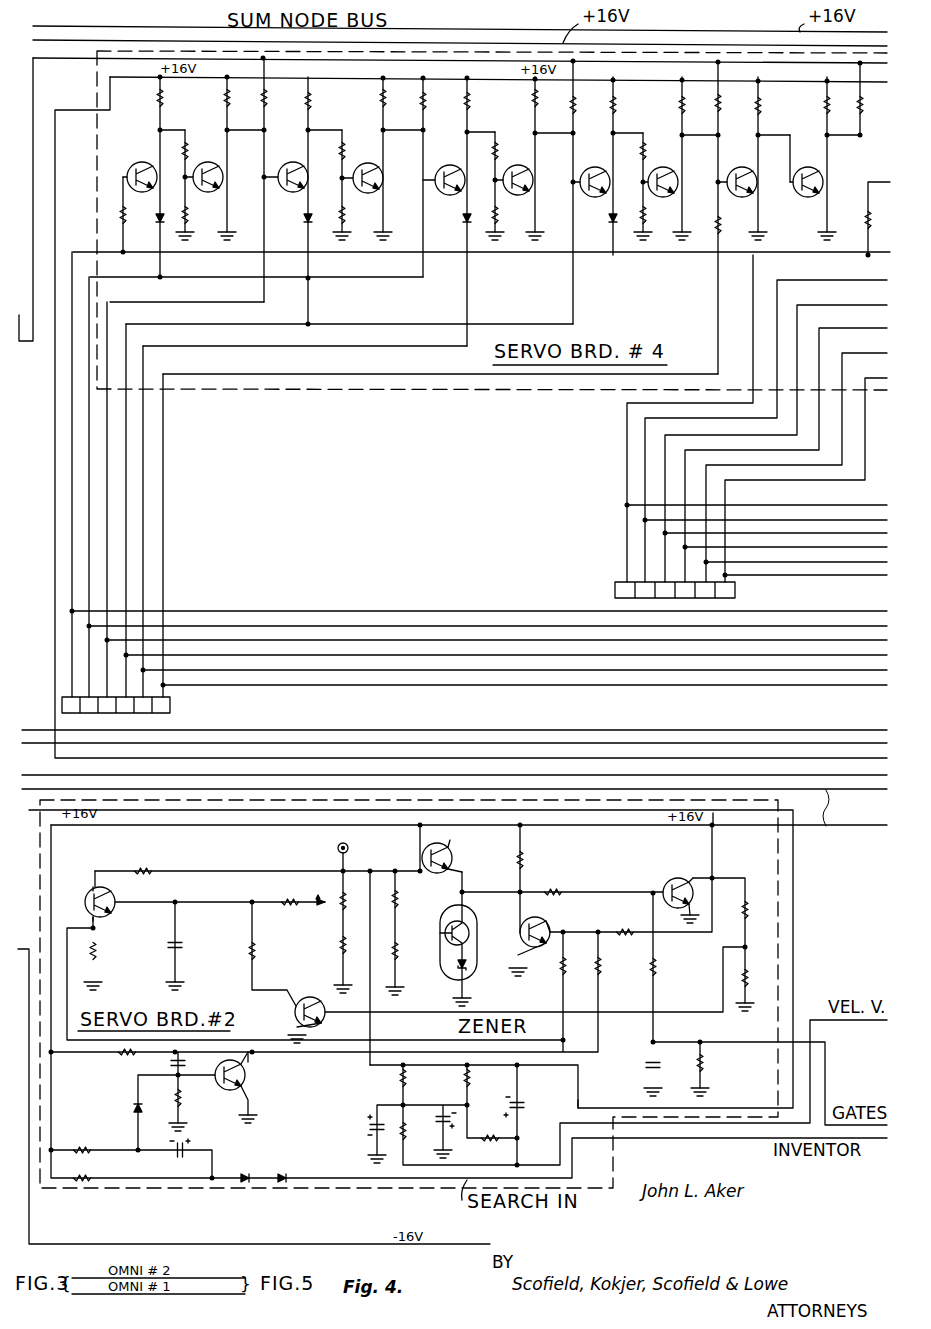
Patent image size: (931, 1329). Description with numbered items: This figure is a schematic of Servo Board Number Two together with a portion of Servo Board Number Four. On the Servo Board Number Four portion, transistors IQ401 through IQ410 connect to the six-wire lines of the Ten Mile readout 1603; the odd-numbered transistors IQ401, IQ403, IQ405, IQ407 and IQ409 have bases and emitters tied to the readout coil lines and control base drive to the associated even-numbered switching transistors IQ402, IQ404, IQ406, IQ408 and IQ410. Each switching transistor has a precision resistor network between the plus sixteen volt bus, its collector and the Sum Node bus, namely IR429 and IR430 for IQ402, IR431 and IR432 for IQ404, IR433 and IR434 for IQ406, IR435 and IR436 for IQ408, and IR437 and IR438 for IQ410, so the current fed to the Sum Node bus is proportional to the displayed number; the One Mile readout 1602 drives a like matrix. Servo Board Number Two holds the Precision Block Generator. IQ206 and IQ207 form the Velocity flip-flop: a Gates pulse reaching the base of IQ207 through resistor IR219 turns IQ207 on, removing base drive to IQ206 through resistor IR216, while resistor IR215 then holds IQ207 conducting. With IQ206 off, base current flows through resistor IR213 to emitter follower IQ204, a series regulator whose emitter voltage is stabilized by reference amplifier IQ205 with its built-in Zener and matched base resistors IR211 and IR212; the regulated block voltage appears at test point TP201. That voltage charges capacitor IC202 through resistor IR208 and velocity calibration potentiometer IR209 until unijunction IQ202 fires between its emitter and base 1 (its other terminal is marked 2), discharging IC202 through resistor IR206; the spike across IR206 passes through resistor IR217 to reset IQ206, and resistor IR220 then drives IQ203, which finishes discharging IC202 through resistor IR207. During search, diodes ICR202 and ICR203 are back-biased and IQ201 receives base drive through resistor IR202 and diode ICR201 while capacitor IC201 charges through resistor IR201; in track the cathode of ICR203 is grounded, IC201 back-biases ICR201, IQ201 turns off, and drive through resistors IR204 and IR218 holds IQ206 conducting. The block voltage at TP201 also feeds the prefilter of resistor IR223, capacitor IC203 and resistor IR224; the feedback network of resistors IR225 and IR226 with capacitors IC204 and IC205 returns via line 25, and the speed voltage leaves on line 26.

The precision resistor IR429 is at (183, 101).
The precision resistor IR430 is at (287, 84).
The precision resistor IR431 is at (380, 98).
The precision resistor IR432 is at (445, 98).
The precision resistor IR433 is at (533, 98).
The precision resistor IR434 is at (593, 117).
The precision resistor IR435 is at (680, 103).
The precision resistor IR436 is at (720, 100).
The precision resistor IR437 is at (825, 113).
The precision resistor IR438 is at (862, 115).
The decoding transistor IQ401 is at (133, 166).
The switching transistor IQ402 is at (223, 173).
The decoding transistor IQ403 is at (300, 160).
The switching transistor IQ404 is at (382, 175).
The decoding transistor IQ405 is at (458, 165).
The switching transistor IQ406 is at (532, 176).
The decoding transistor IQ407 is at (605, 167).
The switching transistor IQ408 is at (678, 178).
The decoding transistor IQ409 is at (755, 187).
The switching transistor IQ410 is at (822, 188).
The One Mile readout 1602 is at (751, 438).
The Ten Mile readout 1603 is at (251, 705).
The transistor IQ201 is at (253, 1083).
The unijunction transistor IQ202 is at (122, 894).
The transistor IQ203 is at (292, 1008).
The emitter follower IQ204 is at (456, 854).
The reference amplifier IQ205 is at (475, 927).
The Velocity flip-flop transistor IQ206 is at (553, 933).
The Velocity flip-flop transistor IQ207 is at (670, 882).
The resistor IR201 is at (86, 1168).
The resistor IR202 is at (84, 1138).
The resistor IR204 is at (124, 1055).
The resistor IR206 is at (115, 951).
The resistor IR207 is at (274, 951).
The resistor IR208 is at (292, 900).
The velocity calibration potentiometer IR209 is at (340, 912).
The resistor IR211 is at (398, 903).
The resistor IR212 is at (398, 960).
The resistor IR213 is at (522, 858).
The resistor IR215 is at (572, 882).
The resistor IR216 is at (622, 936).
The resistor IR217 is at (562, 975).
The resistor IR218 is at (600, 973).
The resistor IR219 is at (655, 972).
The resistor IR220 is at (748, 912).
The resistor IR223 is at (400, 1080).
The resistor IR224 is at (400, 1128).
The feedback resistor IR225 is at (464, 1084).
The feedback resistor IR226 is at (487, 1141).
The capacitor IC201 is at (178, 1148).
The capacitor IC202 is at (195, 940).
The capacitor IC203 is at (372, 1125).
The feedback capacitor IC204 is at (438, 1117).
The feedback capacitor IC205 is at (520, 1106).
The diode ICR201 is at (135, 1112).
The diode ICR202 is at (236, 1166).
The diode ICR203 is at (284, 1175).
The test point TP201 is at (367, 852).
The base 1 is at (105, 915).
The transistor collector terminal 2 is at (93, 891).
The line 25 is at (600, 1107).
The line 26 is at (827, 828).